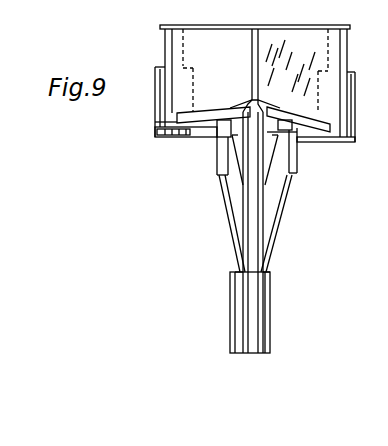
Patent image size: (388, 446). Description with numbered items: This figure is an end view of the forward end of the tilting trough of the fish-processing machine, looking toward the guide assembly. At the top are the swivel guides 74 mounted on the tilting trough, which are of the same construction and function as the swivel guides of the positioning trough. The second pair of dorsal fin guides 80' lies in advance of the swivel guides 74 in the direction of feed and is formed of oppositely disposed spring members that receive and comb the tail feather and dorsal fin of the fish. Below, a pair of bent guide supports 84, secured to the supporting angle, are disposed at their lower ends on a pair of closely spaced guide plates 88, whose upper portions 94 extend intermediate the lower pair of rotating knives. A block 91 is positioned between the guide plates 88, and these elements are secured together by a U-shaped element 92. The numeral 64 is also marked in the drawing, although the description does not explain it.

The swivel guides 74 is at (222, 31).
The second pair of dorsal fin guides 80' is at (250, 70).
The upper portions of the guide plates 94 is at (240, 145).
The guide plates 88 is at (246, 239).
The guide supports 84 is at (223, 212).
The right conical wall 64 is at (283, 212).
The block 91 is at (252, 302).
The U-shaped element 92 is at (270, 334).